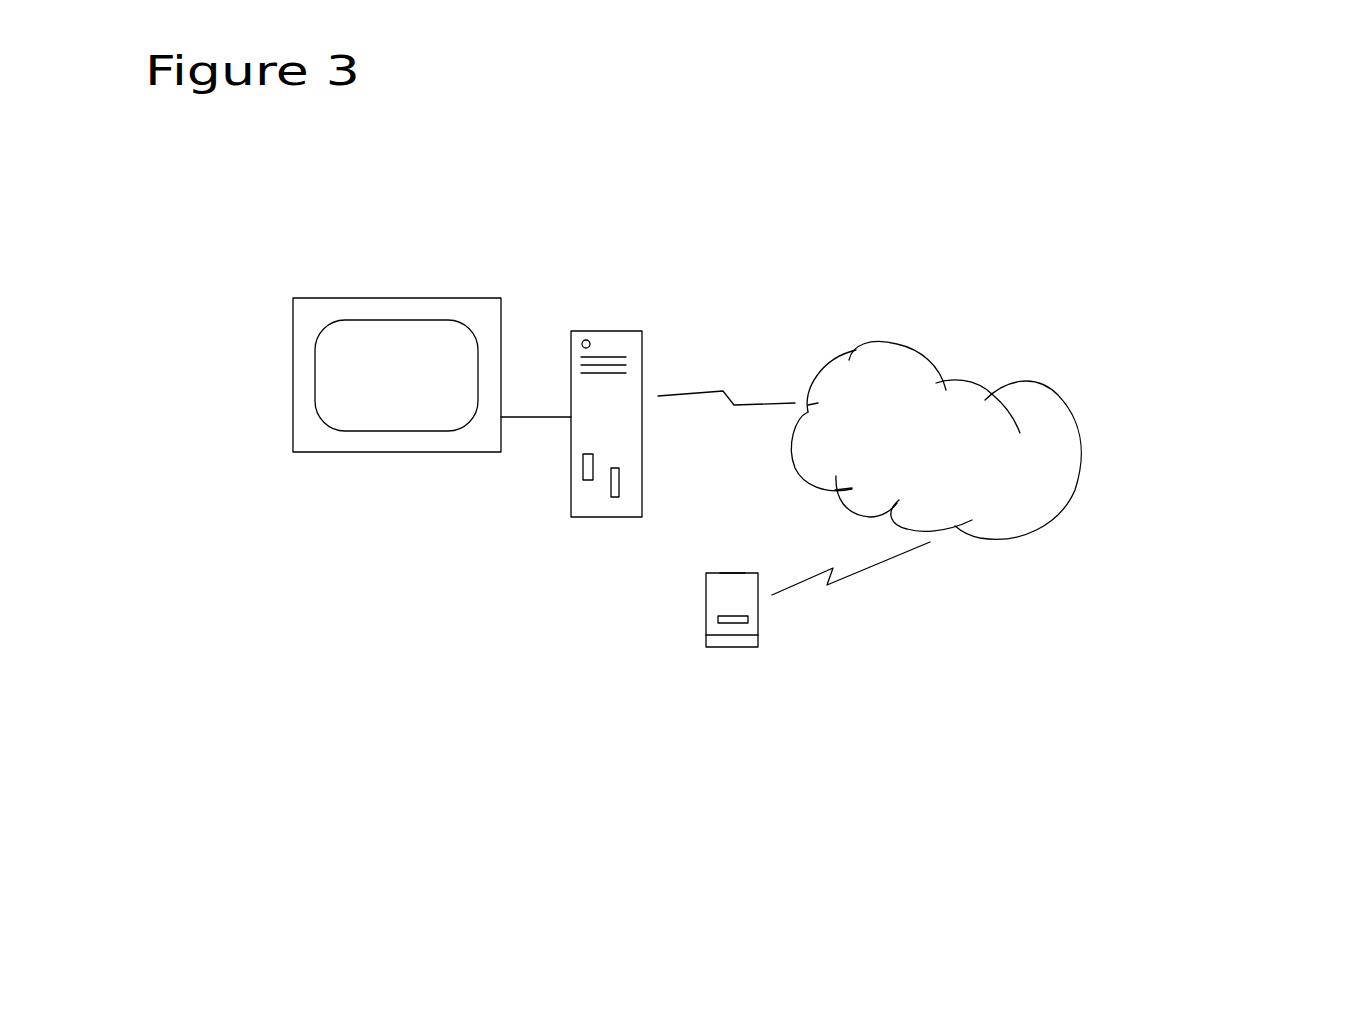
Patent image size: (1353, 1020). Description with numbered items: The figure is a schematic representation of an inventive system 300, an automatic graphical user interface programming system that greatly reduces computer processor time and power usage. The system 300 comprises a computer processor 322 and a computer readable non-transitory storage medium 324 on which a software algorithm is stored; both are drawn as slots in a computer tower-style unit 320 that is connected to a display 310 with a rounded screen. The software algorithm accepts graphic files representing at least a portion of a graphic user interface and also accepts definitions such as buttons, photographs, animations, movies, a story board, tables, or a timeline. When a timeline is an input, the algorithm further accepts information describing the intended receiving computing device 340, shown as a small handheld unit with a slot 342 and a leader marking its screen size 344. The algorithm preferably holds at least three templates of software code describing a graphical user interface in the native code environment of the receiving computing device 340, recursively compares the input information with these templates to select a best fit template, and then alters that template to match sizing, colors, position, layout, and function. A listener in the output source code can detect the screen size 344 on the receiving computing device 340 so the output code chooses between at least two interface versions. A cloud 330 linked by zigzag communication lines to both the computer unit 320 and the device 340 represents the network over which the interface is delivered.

The system 300 is at (1097, 312).
The display monitor 310 is at (293, 350).
The computer 320 is at (607, 331).
The computer processor 322 is at (583, 466).
The computer readable non-transitory storage medium 324 is at (619, 483).
The network 330 is at (972, 438).
The receiving computing device 340 is at (705, 620).
The device slot 342 is at (748, 619).
The screen size 344 is at (732, 573).